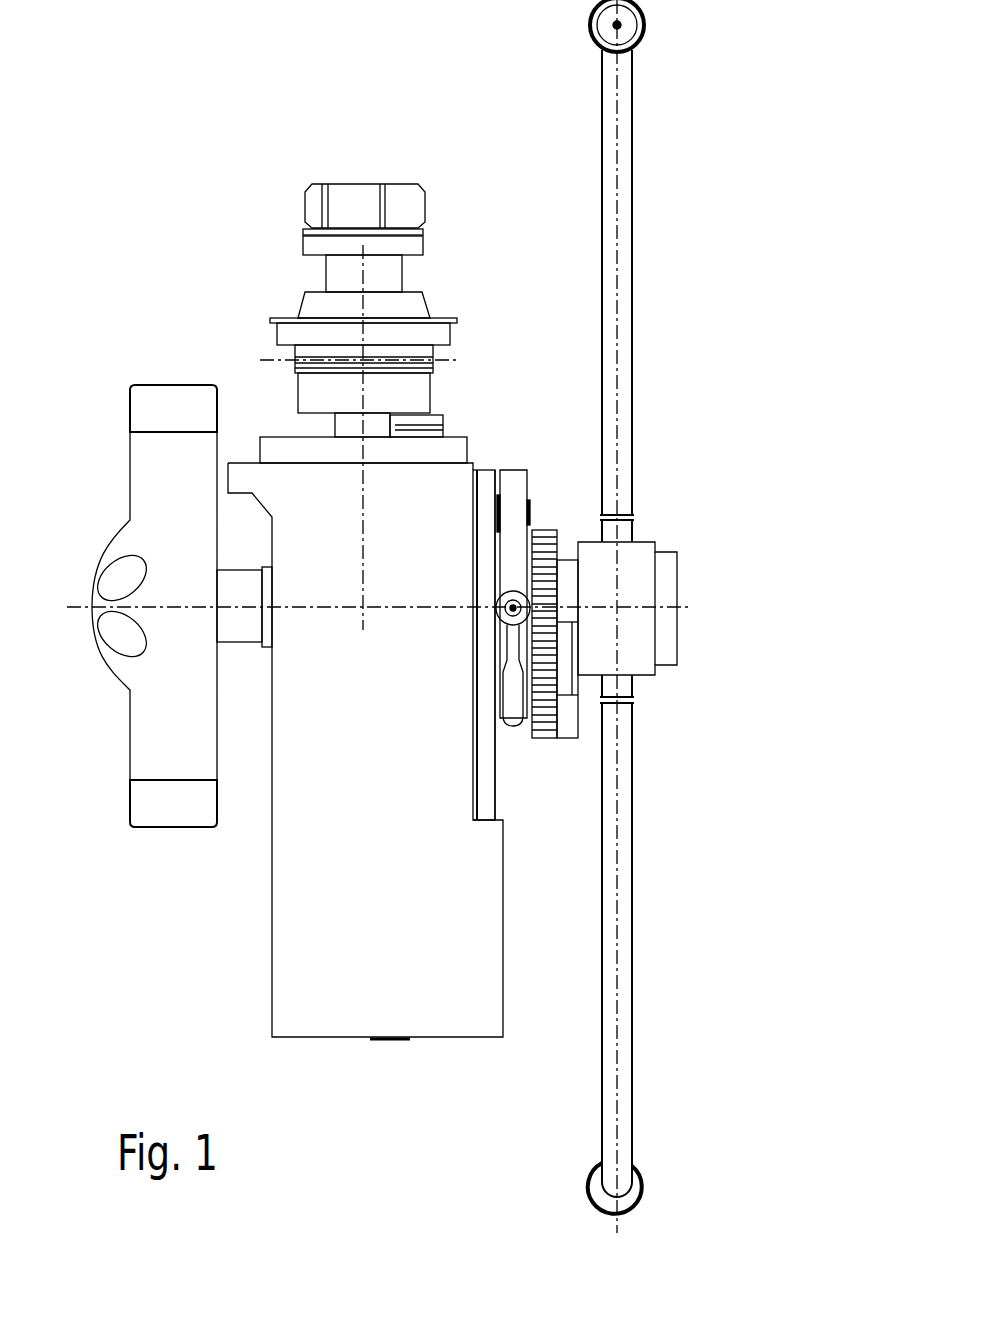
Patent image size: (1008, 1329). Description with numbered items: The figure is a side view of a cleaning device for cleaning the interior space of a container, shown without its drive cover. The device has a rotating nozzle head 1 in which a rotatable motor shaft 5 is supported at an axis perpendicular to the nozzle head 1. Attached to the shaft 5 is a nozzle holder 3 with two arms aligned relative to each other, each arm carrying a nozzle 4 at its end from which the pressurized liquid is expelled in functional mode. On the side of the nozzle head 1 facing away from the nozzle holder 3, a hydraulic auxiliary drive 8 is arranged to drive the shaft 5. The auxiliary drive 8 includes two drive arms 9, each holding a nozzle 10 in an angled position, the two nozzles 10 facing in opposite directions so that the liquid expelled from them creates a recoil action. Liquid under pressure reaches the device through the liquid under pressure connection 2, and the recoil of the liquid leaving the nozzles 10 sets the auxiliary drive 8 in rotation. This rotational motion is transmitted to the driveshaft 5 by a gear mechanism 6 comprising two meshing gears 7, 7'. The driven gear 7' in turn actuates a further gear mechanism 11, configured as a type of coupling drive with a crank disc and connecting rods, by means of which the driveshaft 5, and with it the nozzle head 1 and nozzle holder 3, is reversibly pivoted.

The nozzle head 1 is at (265, 983).
The liquid under pressure connection 2 is at (340, 200).
The nozzle holder 3 is at (118, 688).
The nozzle 4 is at (175, 403).
The motor shaft 5 is at (240, 623).
The gear mechanism 6 is at (540, 527).
The gear 7 is at (552, 592).
The driven gear 7' is at (637, 649).
The hydraulic auxiliary drive 8 is at (638, 380).
The drive arm 9 is at (623, 209).
The nozzle 10 is at (628, 30).
The gear mechanism 11 is at (510, 743).